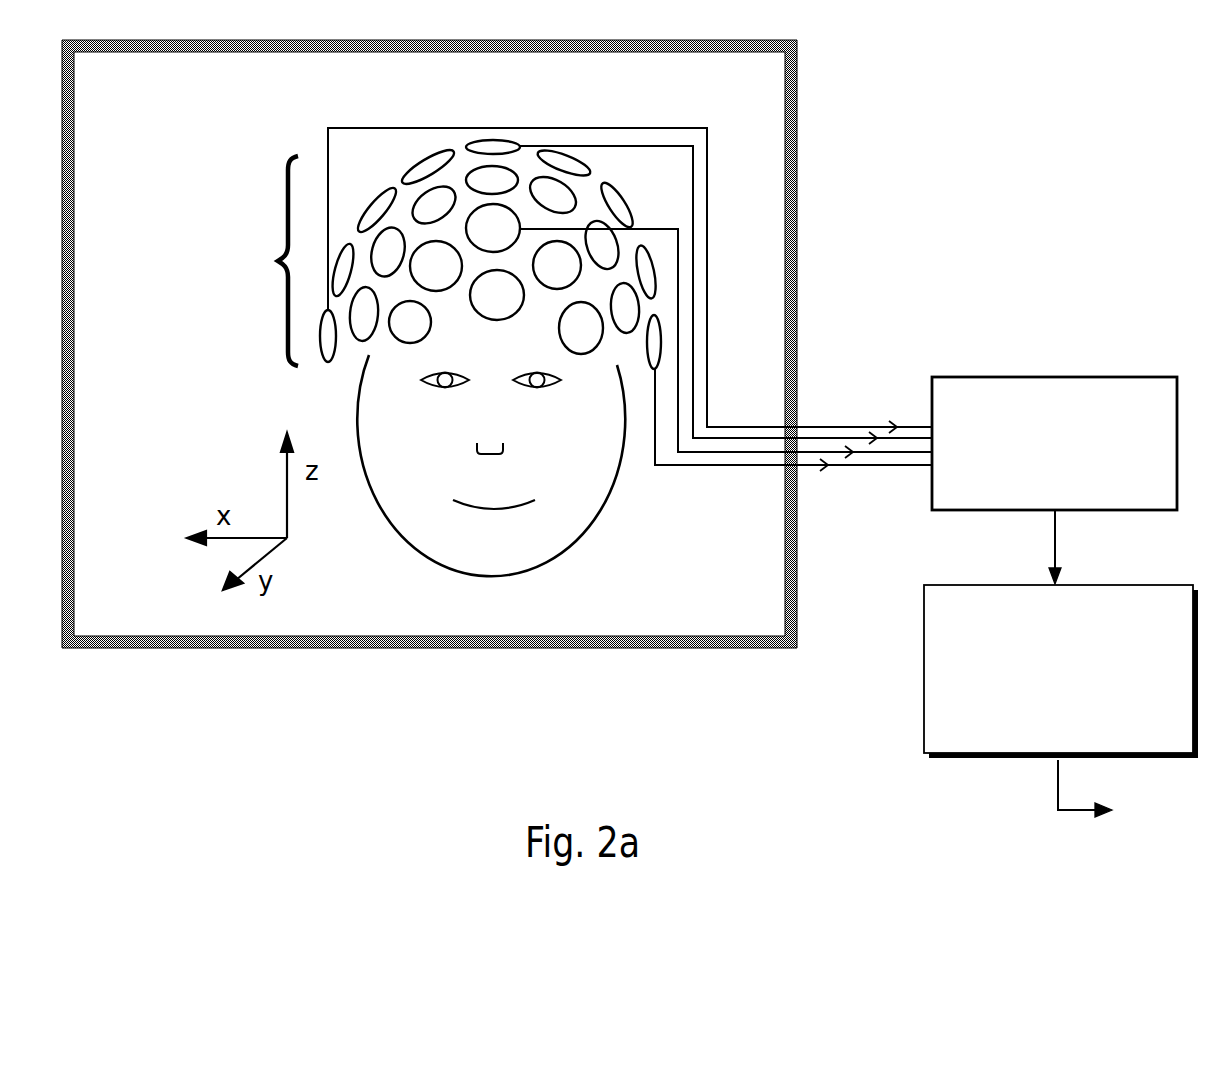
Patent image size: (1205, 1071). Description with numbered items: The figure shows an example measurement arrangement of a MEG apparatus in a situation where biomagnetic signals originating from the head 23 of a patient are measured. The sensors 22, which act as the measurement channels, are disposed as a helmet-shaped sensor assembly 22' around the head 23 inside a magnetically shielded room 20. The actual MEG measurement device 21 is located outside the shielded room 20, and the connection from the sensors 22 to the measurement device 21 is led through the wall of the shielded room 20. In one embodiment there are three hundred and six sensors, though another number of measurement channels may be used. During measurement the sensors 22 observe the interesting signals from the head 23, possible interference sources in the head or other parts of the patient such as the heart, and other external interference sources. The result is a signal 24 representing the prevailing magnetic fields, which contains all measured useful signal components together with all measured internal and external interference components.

The magnetically shielded room 20 is at (800, 235).
The MEG measurement device 21 is at (1044, 377).
The sensors 22 is at (490, 256).
The helmet-shaped sensor assembly 22' is at (265, 261).
The head 23 is at (425, 553).
The signal 24 is at (923, 648).